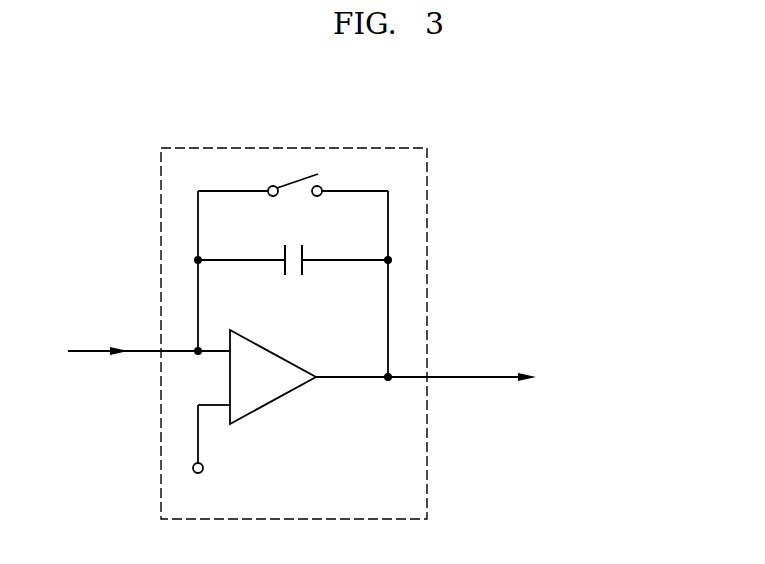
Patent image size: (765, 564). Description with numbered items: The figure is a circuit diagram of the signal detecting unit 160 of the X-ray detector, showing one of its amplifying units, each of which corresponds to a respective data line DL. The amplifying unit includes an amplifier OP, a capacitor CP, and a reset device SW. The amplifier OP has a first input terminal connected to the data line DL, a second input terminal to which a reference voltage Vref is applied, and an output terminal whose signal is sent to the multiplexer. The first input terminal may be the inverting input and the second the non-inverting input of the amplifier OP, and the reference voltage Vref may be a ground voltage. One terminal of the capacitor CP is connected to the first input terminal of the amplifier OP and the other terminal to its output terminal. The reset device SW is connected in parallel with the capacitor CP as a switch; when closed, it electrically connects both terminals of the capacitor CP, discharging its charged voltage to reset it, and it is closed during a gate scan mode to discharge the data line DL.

The signal detecting unit 160 is at (556, 202).
The reset device SW is at (293, 200).
The capacitor CP is at (293, 275).
The amplifier OP is at (273, 377).
The data line DL is at (133, 351).
The reference voltage Vref is at (204, 455).